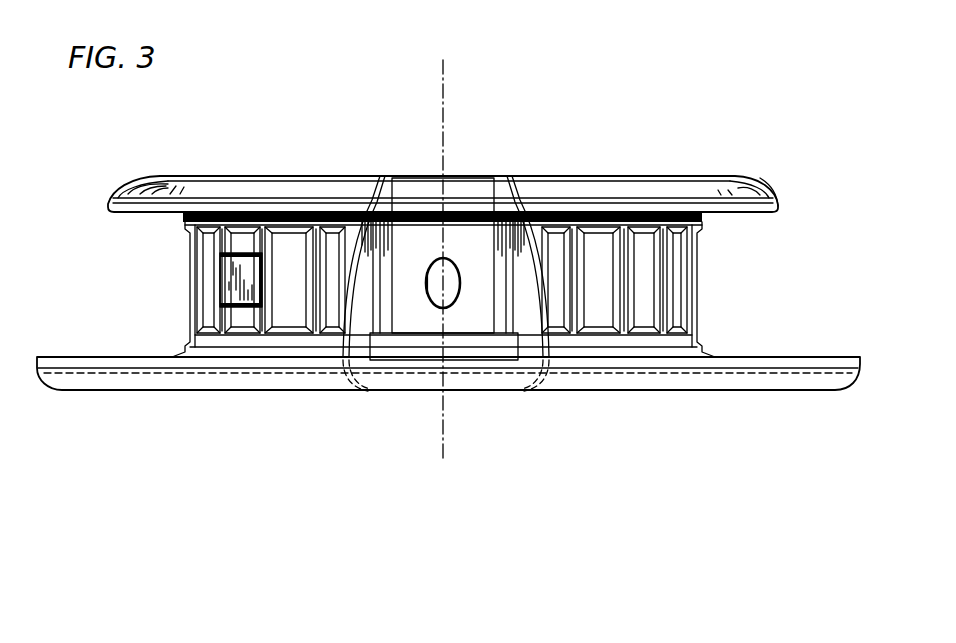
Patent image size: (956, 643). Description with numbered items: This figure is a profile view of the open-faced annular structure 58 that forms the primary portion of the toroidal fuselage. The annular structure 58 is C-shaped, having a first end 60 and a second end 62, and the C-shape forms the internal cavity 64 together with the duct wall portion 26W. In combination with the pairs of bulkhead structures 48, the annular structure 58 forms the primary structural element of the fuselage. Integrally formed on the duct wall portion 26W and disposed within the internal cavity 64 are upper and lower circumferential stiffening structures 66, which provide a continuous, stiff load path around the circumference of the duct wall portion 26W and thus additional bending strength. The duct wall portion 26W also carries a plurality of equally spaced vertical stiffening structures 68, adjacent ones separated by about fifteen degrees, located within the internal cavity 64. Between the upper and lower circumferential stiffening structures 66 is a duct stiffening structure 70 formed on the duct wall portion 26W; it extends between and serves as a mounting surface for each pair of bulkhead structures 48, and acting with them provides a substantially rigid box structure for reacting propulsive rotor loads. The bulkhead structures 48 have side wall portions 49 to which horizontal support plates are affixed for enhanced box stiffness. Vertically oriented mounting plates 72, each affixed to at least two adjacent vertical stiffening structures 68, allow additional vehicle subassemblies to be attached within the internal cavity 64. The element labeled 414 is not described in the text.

The duct wall portion 26W is at (702, 297).
The bulkhead structures 48 is at (343, 343).
The side wall portions 49 is at (382, 313).
The open-faced annular structure 58 is at (747, 192).
The first end 60 is at (784, 206).
The second end 62 is at (853, 357).
The internal cavity 64 is at (110, 278).
The circumferential stiffening structures 66 is at (288, 224).
The vertical stiffening structures 68 is at (261, 240).
The duct stiffening structure 70 is at (437, 245).
The mounting plates 72 is at (232, 297).
The mounting block 414 is at (452, 348).